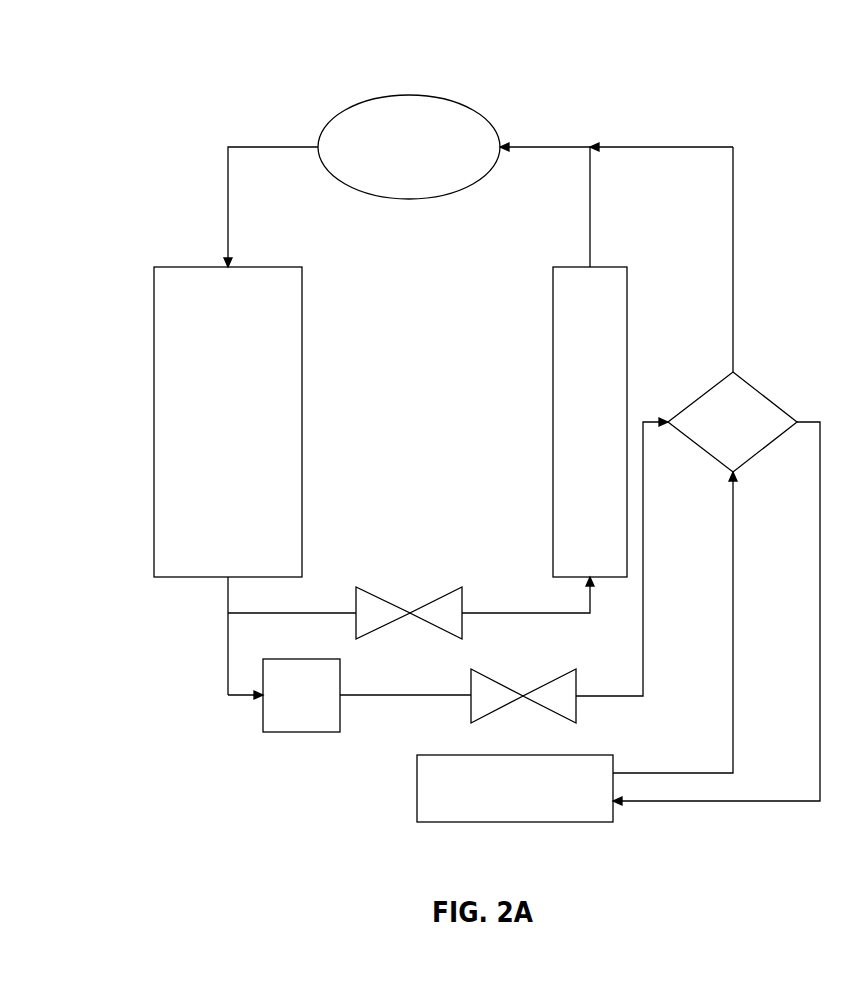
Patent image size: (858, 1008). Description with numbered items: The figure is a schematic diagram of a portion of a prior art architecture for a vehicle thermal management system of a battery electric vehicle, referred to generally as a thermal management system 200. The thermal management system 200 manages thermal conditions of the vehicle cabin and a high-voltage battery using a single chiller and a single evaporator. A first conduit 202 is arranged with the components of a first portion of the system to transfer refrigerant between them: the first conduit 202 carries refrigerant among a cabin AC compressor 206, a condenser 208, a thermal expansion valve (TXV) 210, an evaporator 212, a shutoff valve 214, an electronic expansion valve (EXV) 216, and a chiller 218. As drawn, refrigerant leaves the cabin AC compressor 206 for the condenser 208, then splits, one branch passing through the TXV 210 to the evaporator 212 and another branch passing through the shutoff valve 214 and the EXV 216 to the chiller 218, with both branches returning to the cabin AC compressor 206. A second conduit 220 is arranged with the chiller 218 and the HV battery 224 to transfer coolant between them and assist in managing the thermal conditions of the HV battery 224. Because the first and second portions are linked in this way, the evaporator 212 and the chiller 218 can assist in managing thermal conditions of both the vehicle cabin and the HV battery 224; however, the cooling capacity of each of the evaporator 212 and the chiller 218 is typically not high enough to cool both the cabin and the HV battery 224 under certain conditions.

The thermal management system 200 is at (245, 93).
The first conduit 202 is at (660, 147).
The cabin AC compressor 206 is at (463, 103).
The condenser 208 is at (193, 267).
The thermal expansion valve (TXV) 210 is at (462, 600).
The evaporator 212 is at (605, 267).
The shutoff valve 214 is at (300, 733).
The electronic expansion valve (EXV) 216 is at (577, 708).
The chiller 218 is at (765, 395).
The second conduit 220 is at (820, 603).
The HV battery 224 is at (417, 788).